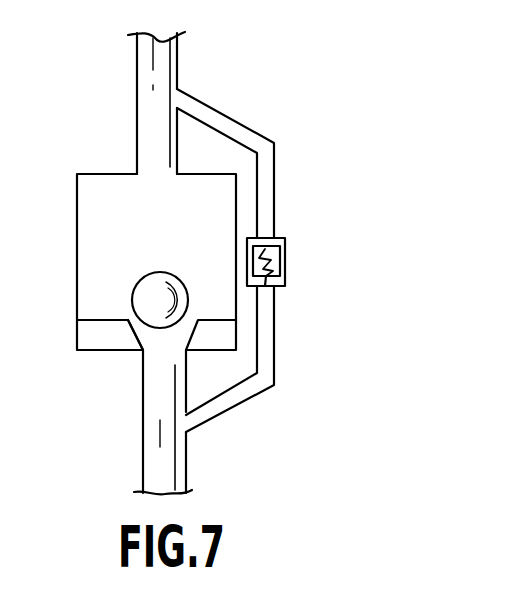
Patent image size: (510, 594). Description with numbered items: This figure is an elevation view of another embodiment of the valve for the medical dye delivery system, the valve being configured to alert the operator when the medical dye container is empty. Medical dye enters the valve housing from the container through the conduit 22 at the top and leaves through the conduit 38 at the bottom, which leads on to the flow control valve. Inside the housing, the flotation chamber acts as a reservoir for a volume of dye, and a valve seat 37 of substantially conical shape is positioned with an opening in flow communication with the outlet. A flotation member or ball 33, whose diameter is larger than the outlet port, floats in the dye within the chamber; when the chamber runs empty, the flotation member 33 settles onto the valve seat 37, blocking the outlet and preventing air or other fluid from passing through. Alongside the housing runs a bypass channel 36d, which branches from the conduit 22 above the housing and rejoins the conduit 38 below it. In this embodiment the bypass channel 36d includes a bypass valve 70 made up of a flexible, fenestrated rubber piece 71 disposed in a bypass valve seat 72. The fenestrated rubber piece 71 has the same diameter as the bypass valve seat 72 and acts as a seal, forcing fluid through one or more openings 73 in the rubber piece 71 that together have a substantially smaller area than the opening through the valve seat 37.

The conduit 22 is at (177, 52).
The flotation member 33 is at (133, 297).
The bypass channel 36d is at (252, 128).
The valve seat 37 is at (131, 328).
The conduit 38 is at (187, 455).
The bypass valve 70 is at (315, 247).
The fenestrated rubber piece 71 is at (265, 277).
The bypass valve seat 72 is at (288, 267).
The openings 73 is at (280, 258).